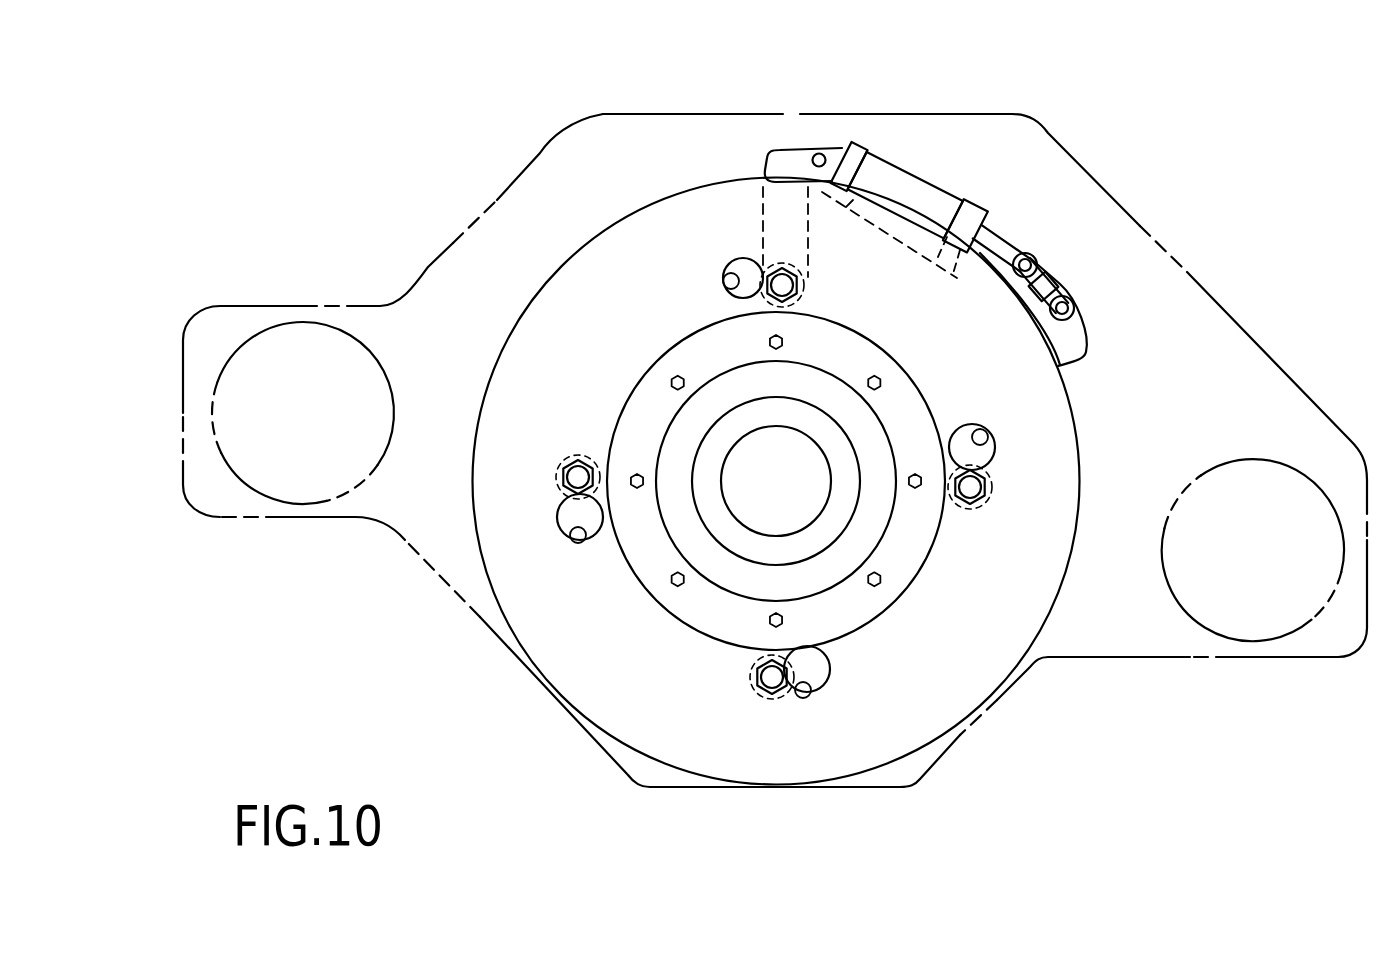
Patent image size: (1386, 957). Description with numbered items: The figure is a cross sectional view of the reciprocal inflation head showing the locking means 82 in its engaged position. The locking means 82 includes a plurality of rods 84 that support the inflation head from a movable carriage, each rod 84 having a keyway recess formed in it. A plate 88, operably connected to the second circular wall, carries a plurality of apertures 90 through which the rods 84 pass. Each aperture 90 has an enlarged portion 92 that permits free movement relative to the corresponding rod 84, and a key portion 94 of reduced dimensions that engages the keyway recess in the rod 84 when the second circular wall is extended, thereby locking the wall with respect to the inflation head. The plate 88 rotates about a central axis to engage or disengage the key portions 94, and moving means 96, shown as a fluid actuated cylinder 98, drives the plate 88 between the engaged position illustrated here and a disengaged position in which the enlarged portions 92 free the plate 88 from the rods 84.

The locking means 82 is at (675, 675).
The rod 84 is at (780, 272).
The plate 88 is at (912, 642).
The aperture 90 is at (779, 268).
The enlarged portion 92 is at (725, 283).
The key portion 94 is at (732, 260).
The moving means 96 is at (900, 152).
The fluid actuated cylinder 98 is at (936, 198).